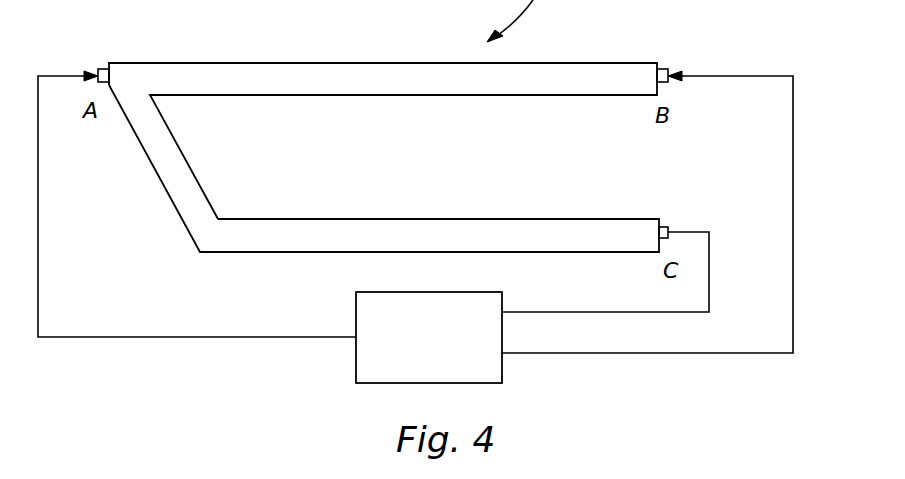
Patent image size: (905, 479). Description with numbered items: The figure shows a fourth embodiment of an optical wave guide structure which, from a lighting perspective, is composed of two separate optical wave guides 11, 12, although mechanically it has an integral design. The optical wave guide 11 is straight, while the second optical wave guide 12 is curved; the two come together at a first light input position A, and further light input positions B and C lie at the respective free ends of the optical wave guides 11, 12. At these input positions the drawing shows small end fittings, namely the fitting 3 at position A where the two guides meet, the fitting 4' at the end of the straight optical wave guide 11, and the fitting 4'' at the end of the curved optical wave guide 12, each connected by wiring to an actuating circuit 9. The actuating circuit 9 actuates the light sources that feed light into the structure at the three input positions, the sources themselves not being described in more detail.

The connection at first end 3 is at (101, 68).
The connection at second end 4' is at (676, 56).
The connection at third end 4'' is at (681, 208).
The actuating circuit 9 is at (429, 337).
The optical wave guide 11 is at (319, 77).
The optical wave guide 12 is at (411, 233).